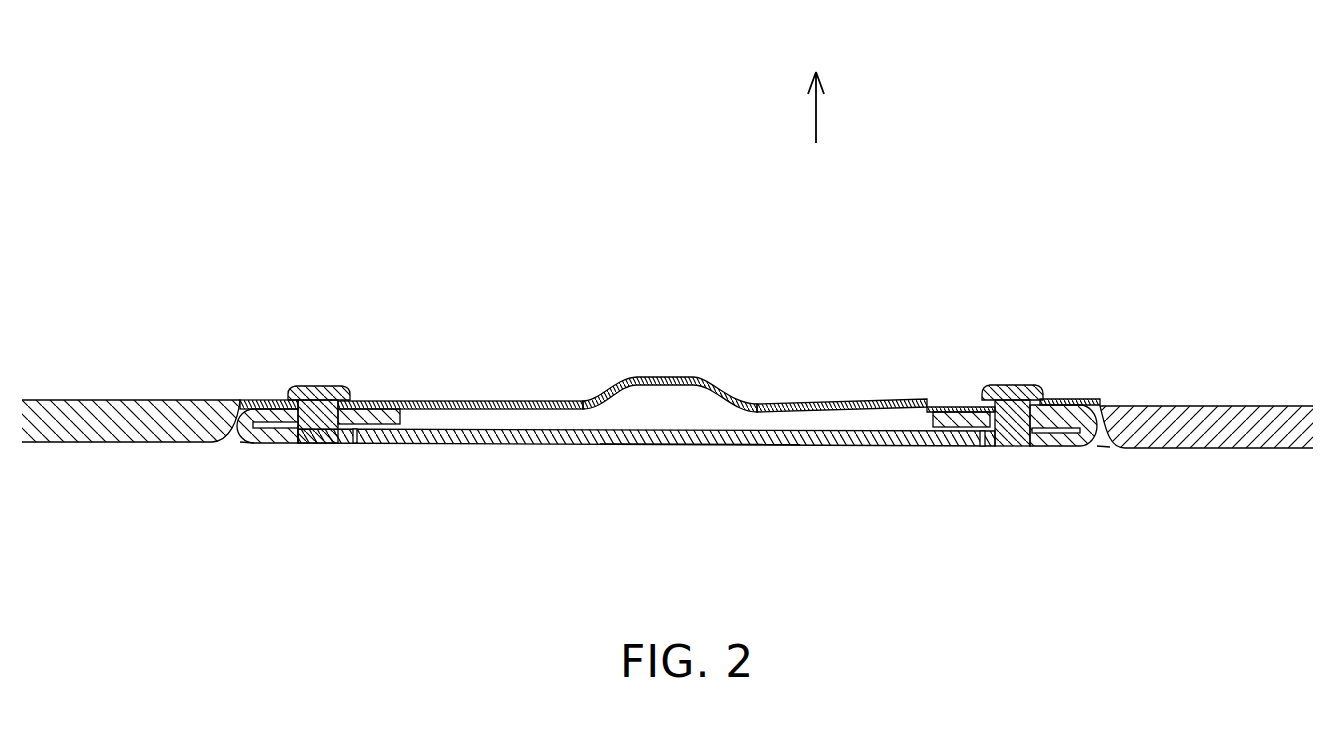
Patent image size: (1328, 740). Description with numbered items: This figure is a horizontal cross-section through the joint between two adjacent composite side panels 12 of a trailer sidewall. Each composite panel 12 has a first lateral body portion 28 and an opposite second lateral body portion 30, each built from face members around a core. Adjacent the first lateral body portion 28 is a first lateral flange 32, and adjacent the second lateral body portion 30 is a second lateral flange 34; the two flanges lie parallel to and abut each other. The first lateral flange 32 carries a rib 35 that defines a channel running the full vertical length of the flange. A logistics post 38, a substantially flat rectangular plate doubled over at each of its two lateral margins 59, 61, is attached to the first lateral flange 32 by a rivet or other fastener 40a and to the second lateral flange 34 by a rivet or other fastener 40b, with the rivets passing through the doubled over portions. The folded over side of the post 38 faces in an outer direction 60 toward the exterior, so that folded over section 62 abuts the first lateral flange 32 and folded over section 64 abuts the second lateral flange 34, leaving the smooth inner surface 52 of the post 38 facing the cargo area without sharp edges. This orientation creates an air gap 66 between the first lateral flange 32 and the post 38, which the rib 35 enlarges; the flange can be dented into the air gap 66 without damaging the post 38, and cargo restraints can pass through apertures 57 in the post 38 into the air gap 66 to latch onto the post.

The composite panel 12 is at (632, 217).
The first lateral body portion 28 is at (222, 320).
The second lateral body portion 30 is at (1318, 318).
The first lateral flange 32 is at (470, 402).
The second lateral flange 34 is at (924, 410).
The rib 35 is at (677, 380).
The post 38 is at (598, 437).
The fastener 40a is at (319, 386).
The fastener 40b is at (1010, 386).
The inner surface of post 52 is at (722, 447).
The apertures 57 is at (641, 465).
The lateral margin 59 is at (281, 497).
The outer direction 60 is at (816, 108).
The lateral margin 61 is at (1030, 508).
The folded over section 62 is at (378, 424).
The folded over section 64 is at (1062, 422).
The air gap 66 is at (562, 426).